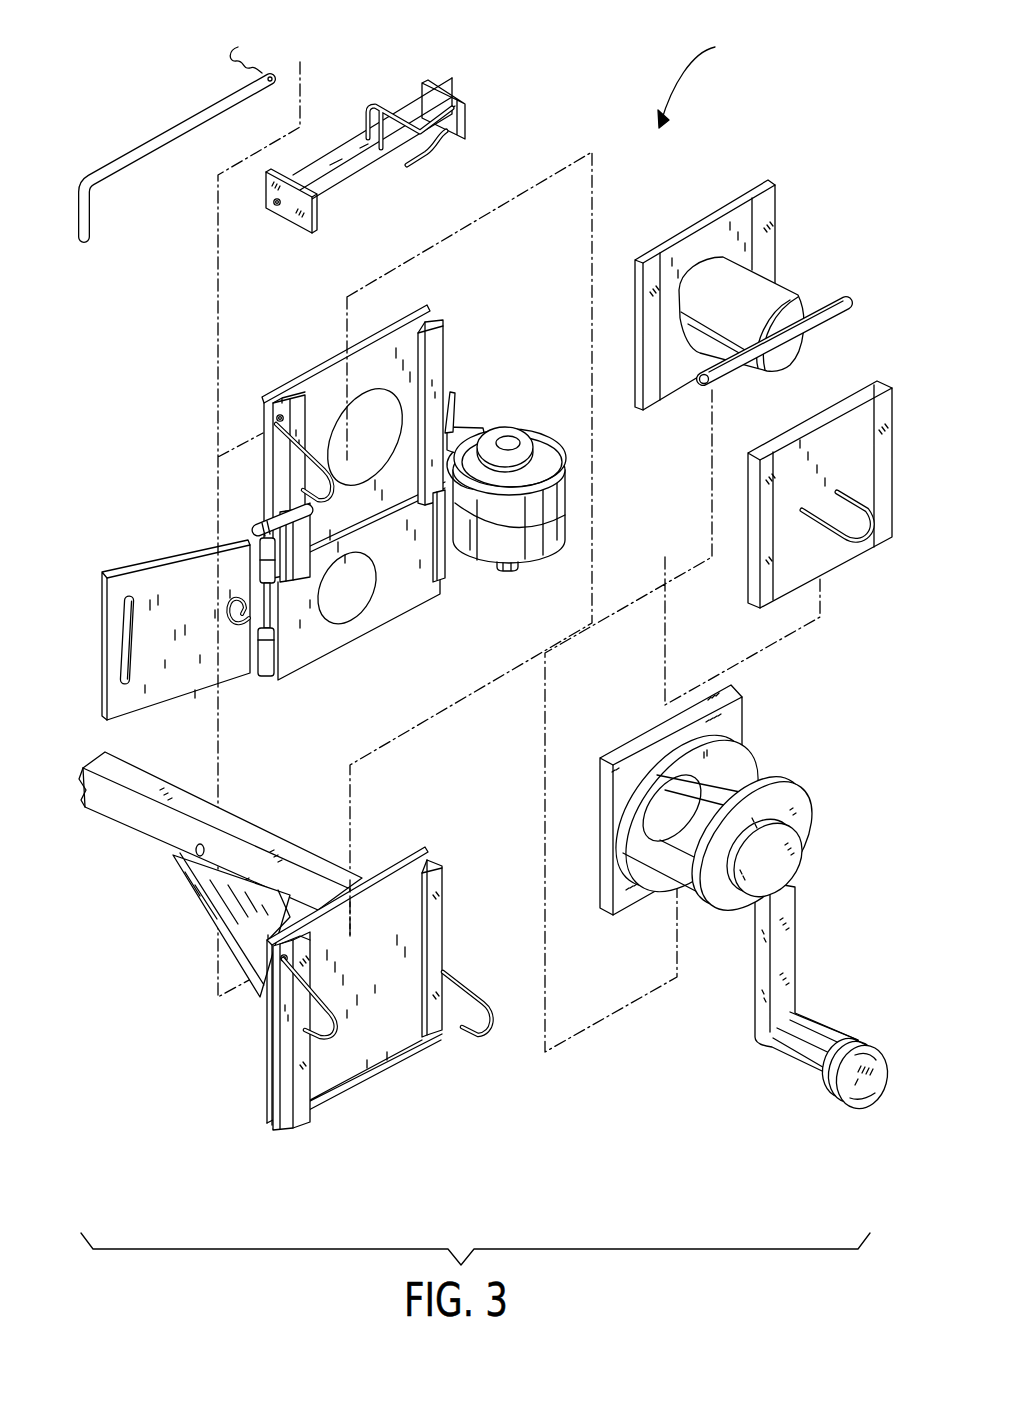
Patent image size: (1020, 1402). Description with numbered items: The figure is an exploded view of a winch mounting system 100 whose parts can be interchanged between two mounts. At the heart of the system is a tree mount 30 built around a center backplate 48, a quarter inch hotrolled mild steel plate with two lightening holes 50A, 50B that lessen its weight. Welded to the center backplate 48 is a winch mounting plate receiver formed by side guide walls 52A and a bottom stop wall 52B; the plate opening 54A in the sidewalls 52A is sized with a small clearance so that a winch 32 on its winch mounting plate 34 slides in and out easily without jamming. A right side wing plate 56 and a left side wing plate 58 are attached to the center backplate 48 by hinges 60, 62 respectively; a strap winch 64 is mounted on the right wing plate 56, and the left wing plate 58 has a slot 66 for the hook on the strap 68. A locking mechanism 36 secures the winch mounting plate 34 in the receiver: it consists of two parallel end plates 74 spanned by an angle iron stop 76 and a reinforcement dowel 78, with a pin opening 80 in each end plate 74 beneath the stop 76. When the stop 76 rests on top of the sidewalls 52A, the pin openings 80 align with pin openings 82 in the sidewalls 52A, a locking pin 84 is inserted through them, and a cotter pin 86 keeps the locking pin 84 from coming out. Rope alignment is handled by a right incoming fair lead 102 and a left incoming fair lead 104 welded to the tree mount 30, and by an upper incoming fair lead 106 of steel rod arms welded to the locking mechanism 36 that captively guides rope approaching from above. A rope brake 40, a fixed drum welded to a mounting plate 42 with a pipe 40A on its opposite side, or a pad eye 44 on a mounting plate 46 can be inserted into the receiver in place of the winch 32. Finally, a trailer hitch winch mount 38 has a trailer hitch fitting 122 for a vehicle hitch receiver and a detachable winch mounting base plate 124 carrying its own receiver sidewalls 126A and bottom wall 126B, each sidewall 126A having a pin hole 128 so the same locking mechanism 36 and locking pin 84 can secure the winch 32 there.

The tree mount 30 is at (336, 499).
The winch 32 is at (775, 800).
The winch mounting plate 34 is at (722, 718).
The locking mechanism 36 is at (344, 152).
The trailer hitch winch mount 38 is at (218, 874).
The rope brake 40 is at (755, 292).
The pipe 40A is at (818, 316).
The mounting plate 42 is at (708, 238).
The pad eye 44 is at (853, 540).
The mounting plate 46 is at (853, 417).
The center backplate 48 is at (293, 388).
The hole 50A is at (340, 412).
The hole 50B is at (350, 601).
The side guide walls 52A is at (330, 441).
The bottom stop wall 52B is at (405, 576).
The plate opening 54A is at (428, 309).
The right side wing plate 56 is at (452, 418).
The left side wing plate 58 is at (148, 623).
The hinge 60 is at (433, 576).
The hinge 62 is at (266, 677).
The strap winch 64 is at (470, 440).
The slot 66 is at (122, 626).
The strap 68 is at (546, 480).
The end plates 74 is at (388, 179).
The angle iron stop 76 is at (323, 158).
The reinforcement dowel 78 is at (343, 182).
The pin opening 80 is at (273, 203).
The pin openings 82 is at (277, 420).
The locking pin 84 is at (115, 162).
The cotter pin 86 is at (238, 46).
The winch mounting system 100 is at (706, 81).
The right incoming fair lead 102 is at (566, 516).
The left incoming fair lead 104 is at (316, 478).
The upper incoming fair lead 106 is at (390, 120).
The trailer hitch fitting 122 is at (242, 843).
The winch mounting base plate 124 is at (343, 1007).
The receiver sidewalls 126A is at (437, 952).
The receiver bottom wall 126B is at (358, 1062).
The pin hole 128 is at (280, 960).